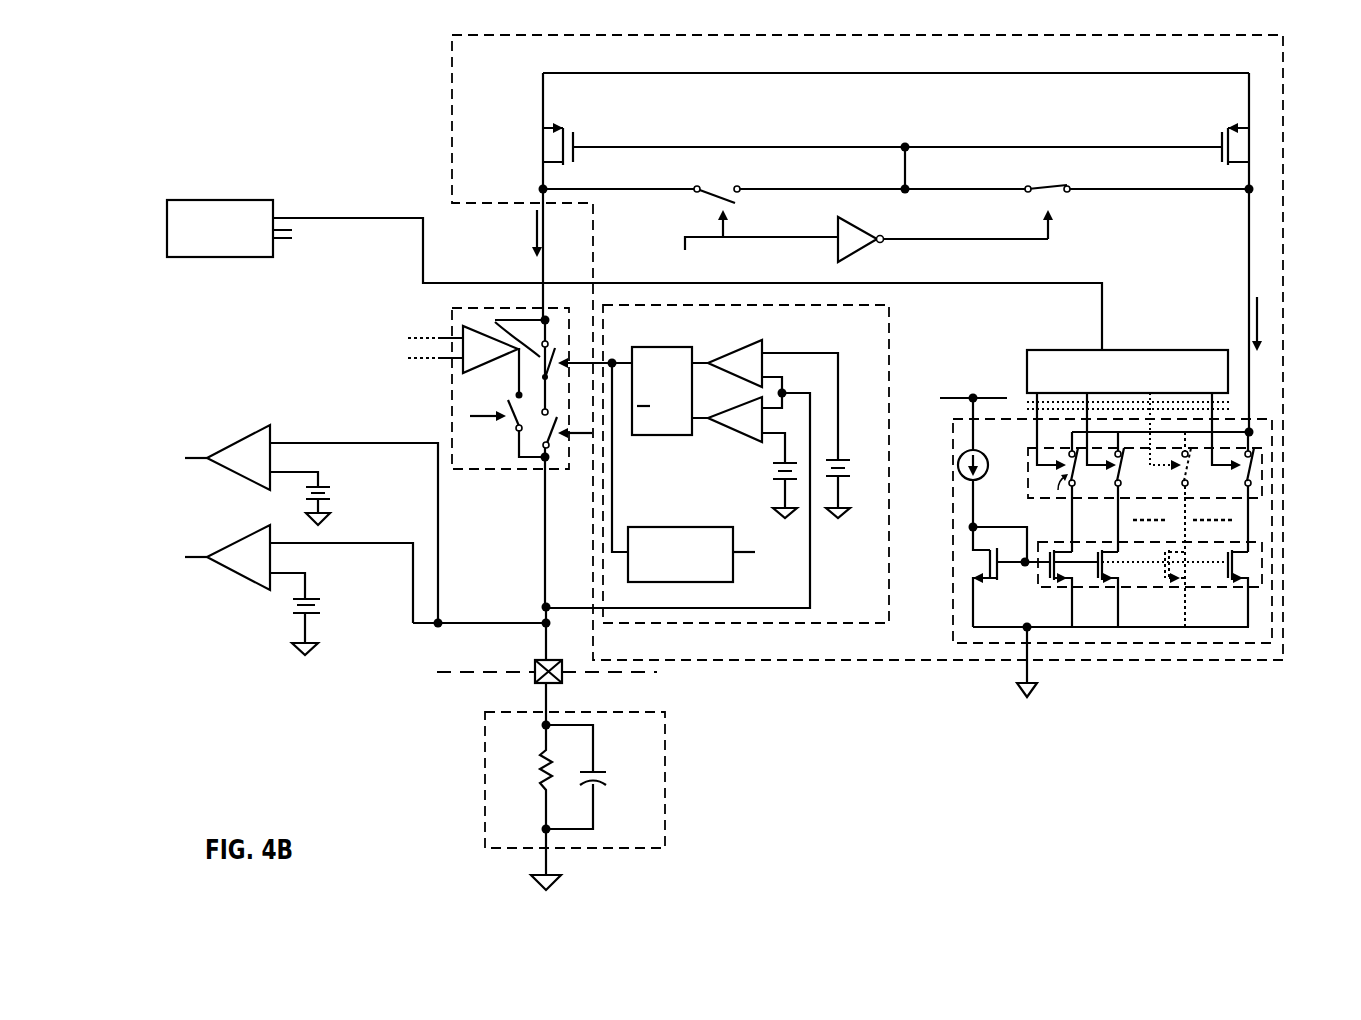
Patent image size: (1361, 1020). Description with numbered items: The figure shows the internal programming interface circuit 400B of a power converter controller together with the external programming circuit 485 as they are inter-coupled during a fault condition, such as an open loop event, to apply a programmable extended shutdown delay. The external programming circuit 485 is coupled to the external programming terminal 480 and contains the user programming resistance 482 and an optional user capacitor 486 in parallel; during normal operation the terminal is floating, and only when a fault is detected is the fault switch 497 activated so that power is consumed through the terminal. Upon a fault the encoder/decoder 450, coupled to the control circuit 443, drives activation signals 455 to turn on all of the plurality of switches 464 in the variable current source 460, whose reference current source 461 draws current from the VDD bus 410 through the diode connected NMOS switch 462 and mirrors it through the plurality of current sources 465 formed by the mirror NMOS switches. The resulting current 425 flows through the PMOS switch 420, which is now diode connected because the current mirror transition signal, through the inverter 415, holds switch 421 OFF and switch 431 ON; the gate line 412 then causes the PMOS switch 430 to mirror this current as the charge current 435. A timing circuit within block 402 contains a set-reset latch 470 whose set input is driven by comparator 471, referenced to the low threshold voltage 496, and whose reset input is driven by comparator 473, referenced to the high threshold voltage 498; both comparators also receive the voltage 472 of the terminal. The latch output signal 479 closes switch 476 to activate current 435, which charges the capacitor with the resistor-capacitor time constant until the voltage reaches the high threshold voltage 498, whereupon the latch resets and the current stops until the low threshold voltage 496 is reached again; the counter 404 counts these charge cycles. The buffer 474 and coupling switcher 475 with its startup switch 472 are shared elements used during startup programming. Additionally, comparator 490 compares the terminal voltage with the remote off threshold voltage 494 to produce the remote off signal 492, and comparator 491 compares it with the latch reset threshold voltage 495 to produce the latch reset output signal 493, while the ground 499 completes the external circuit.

The internal programming interface circuit 400B is at (443, 110).
The control circuit 443 is at (240, 200).
The VDD bus 410 is at (823, 60).
The PMOS switch 430 is at (533, 152).
The gate connection of current mirror 412 is at (823, 137).
The PMOS switch 420 is at (1258, 157).
The switch 431 is at (705, 203).
The switch 421 is at (1060, 208).
The inverter 415 is at (852, 256).
The charge current 435 is at (537, 240).
The current 425 is at (1263, 323).
The latch and counter circuit 402 is at (890, 308).
The buffer 474 is at (473, 325).
The coupling switcher 475 is at (450, 325).
The switch 476 is at (495, 322).
The voltage 472 is at (493, 401).
The fault switch 497 is at (540, 430).
The comparator 490 is at (245, 428).
The remote off output signal 492 is at (162, 430).
The remote off threshold voltage 494 is at (338, 490).
The comparator 491 is at (223, 580).
The latch reset output signal 493 is at (152, 590).
The latch reset threshold voltage 495 is at (320, 600).
The set-reset latch 470 is at (668, 345).
The output signal 479 is at (617, 360).
The comparator 471 is at (710, 352).
The comparator 473 is at (717, 435).
The high threshold voltage VthH 498 is at (767, 470).
The low threshold voltage VthL 496 is at (853, 483).
The counter 404 is at (678, 525).
The encoder/decoder 450 is at (1027, 370).
The activation signals 455 is at (1233, 404).
The variable current source 460 is at (950, 598).
The reference current source 461 is at (960, 447).
The diode connected switch 462 is at (977, 567).
The plurality of switches 464 is at (1262, 470).
The plurality of current sources 465 is at (1212, 595).
The external programming terminal 480 is at (520, 673).
The external programming circuit 485 is at (668, 775).
The resistance RPD 482 is at (537, 780).
The capacitor CPD 486 is at (612, 778).
The ground 499 is at (570, 873).